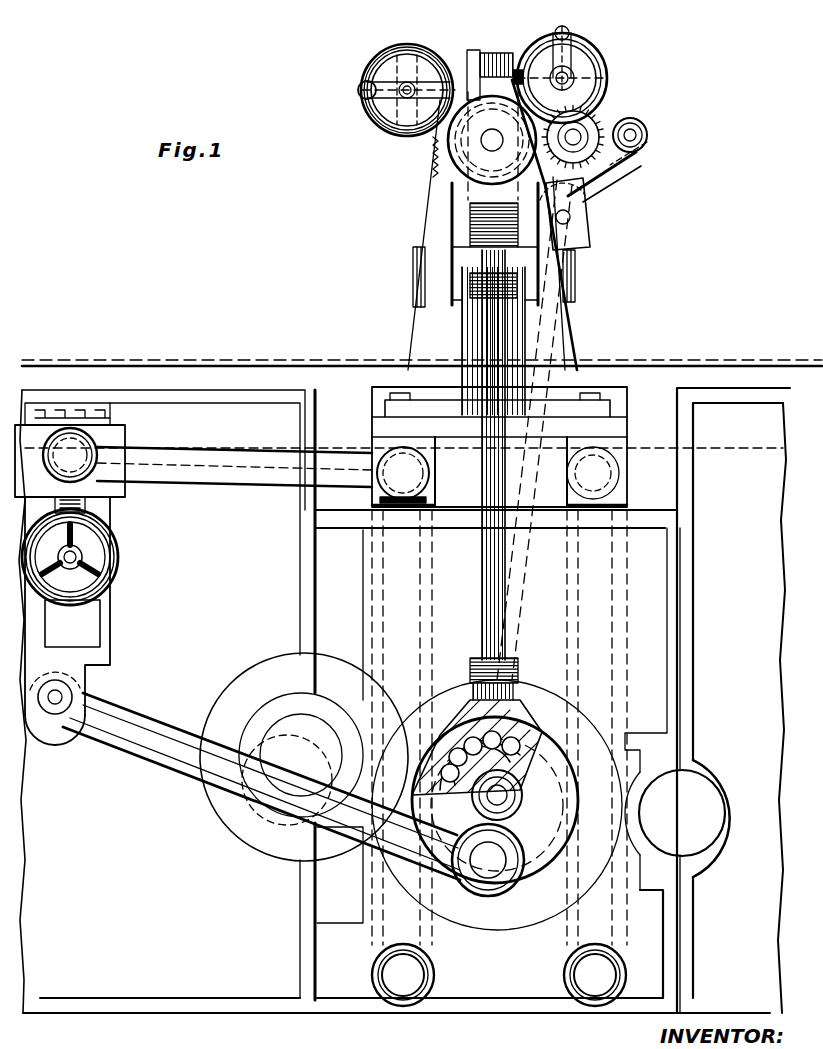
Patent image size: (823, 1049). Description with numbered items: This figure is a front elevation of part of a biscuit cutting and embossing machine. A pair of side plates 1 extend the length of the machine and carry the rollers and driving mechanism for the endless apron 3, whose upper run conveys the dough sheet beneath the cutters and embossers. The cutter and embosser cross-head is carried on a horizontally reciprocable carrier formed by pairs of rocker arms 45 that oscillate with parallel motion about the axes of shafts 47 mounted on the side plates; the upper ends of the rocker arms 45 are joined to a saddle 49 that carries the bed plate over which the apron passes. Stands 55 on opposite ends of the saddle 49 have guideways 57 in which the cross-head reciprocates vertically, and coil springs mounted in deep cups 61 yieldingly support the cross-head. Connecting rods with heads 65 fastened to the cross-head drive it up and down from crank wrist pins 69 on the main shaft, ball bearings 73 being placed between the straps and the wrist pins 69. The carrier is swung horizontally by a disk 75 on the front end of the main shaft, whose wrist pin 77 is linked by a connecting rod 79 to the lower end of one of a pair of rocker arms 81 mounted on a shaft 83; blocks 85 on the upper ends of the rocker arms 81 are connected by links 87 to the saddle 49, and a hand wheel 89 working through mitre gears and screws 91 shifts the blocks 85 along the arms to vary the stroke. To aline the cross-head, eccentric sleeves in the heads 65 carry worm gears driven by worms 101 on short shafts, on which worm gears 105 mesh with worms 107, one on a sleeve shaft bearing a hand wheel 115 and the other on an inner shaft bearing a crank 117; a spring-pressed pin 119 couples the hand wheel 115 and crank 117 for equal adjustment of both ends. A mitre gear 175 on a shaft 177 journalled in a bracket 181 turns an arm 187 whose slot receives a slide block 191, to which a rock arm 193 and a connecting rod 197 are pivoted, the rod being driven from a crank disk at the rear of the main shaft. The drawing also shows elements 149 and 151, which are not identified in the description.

The side plates 1 is at (173, 987).
The endless apron 3 is at (225, 364).
The rocker arms 45 is at (372, 597).
The shafts 47 is at (403, 987).
The saddle 49 is at (376, 428).
The stands 55 is at (418, 318).
The guideways 57 is at (455, 285).
The deep cups 61 is at (527, 337).
The connecting rod heads 65 is at (458, 218).
The crank wrist pins 69 is at (507, 787).
The ball bearings 73 is at (513, 722).
The disk 75 is at (533, 867).
The wrist pin 77 is at (498, 884).
The connecting rod 79 is at (143, 755).
The rocker arms 81 is at (107, 632).
The shaft 83 is at (74, 557).
The blocks 85 is at (107, 440).
The links 87 is at (211, 470).
The hand wheel 89 is at (107, 573).
The screws 91 is at (85, 499).
The worms 101 is at (487, 67).
The worm gears 105 is at (432, 55).
The worms 107 is at (383, 110).
The hand wheel 115 is at (392, 50).
The crank 117 is at (378, 78).
The spring-pressed pin 119 is at (358, 90).
The crank wheel 149 is at (600, 58).
The crank pin 151 is at (571, 36).
The mitre gear 175 is at (638, 150).
The shaft 177 is at (589, 132).
The bracket 181 is at (638, 124).
The arm 187 is at (583, 247).
The slide block 191 is at (597, 206).
The rock arm 193 is at (606, 185).
The connecting rod 197 is at (568, 473).